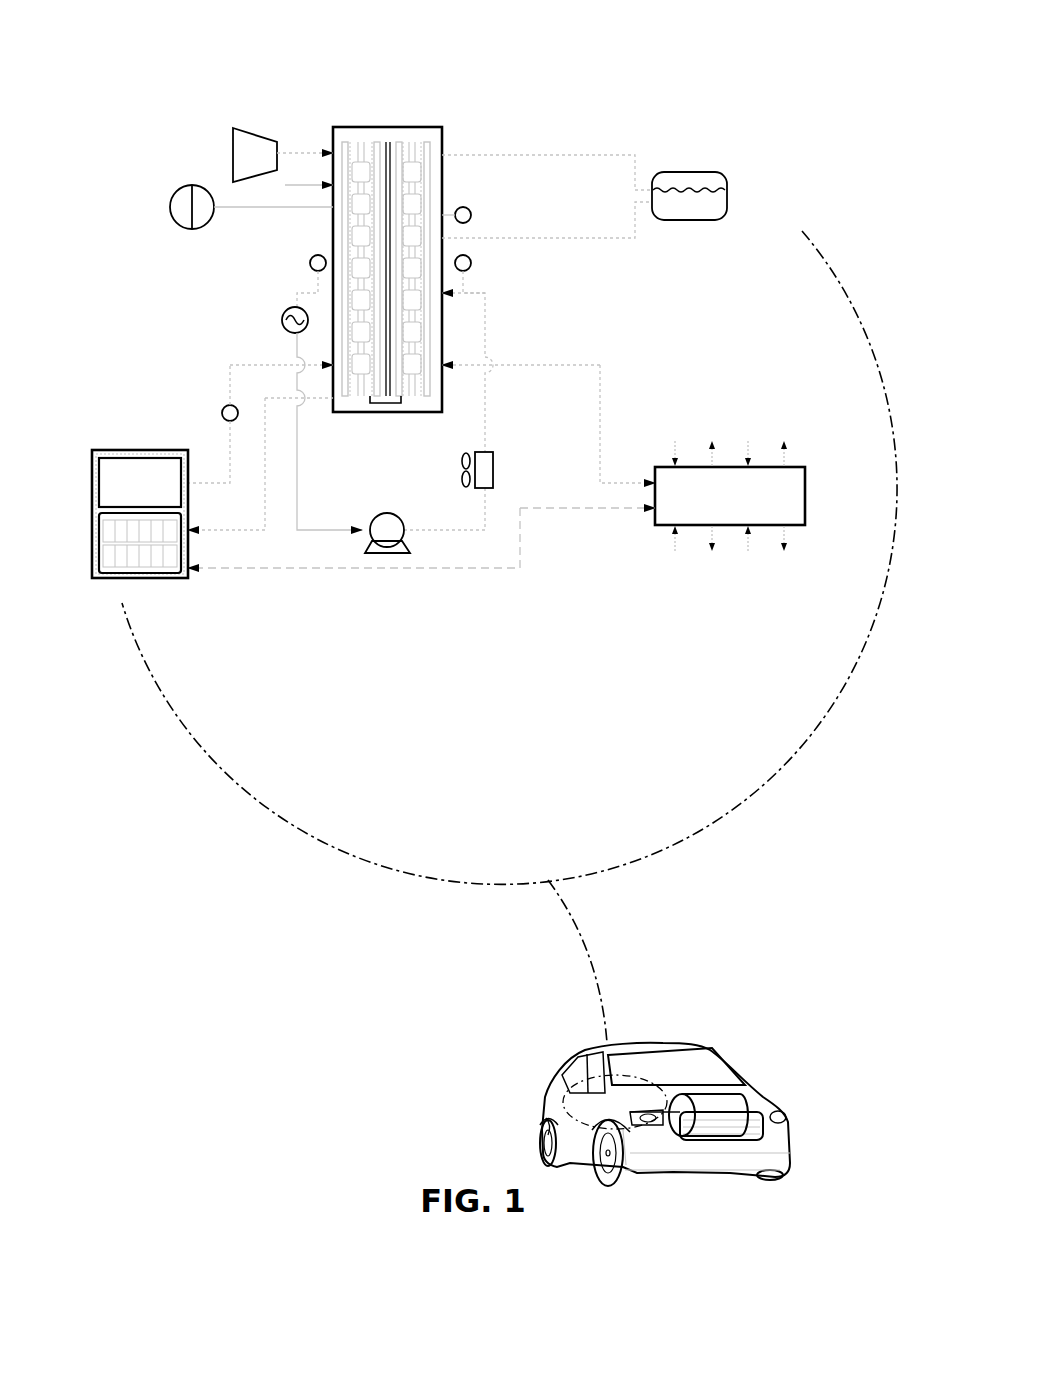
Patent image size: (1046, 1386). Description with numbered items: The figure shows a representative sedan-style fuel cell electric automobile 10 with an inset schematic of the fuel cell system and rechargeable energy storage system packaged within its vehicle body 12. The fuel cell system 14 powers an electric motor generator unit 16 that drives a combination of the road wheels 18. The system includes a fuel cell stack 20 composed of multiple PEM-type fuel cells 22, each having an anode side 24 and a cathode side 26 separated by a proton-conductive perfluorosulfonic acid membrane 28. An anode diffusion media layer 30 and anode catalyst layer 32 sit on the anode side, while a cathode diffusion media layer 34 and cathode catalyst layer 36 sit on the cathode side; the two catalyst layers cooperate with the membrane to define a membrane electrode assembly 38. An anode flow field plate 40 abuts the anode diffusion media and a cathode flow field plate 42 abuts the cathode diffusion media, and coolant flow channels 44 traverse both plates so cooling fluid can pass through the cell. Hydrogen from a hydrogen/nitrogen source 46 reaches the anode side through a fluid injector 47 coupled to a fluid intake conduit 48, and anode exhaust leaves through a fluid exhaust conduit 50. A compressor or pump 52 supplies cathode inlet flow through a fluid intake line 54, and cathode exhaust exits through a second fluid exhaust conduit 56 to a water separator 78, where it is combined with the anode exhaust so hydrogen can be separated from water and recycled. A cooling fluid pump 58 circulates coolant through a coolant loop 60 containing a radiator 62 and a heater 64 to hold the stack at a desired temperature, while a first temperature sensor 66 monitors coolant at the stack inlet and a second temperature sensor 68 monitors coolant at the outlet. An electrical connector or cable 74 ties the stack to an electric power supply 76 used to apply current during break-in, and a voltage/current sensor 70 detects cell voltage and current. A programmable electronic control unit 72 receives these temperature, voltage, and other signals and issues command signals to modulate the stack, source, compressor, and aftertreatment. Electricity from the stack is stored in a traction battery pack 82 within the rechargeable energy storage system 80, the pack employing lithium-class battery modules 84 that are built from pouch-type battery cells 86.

The automobile 10 is at (668, 1065).
The vehicle body 12 is at (757, 1100).
The fuel cell system 14 is at (720, 62).
The electric motor generator unit 16 is at (721, 1095).
The road wheels 18 is at (544, 1126).
The fuel cell stack 20 is at (417, 253).
The fuel cell 22 is at (428, 138).
The anode side 24 is at (288, 192).
The cathode side 26 is at (437, 193).
The proton-conductive perfluorosulfonic acid membrane 28 is at (388, 135).
The anode diffusion media layer 30 is at (358, 127).
The anode catalyst layer 32 is at (378, 138).
The cathode diffusion media layer 34 is at (416, 132).
The cathode catalyst layer 36 is at (398, 138).
The membrane electrode assembly 38 is at (388, 404).
The anode flow field plate 40 is at (355, 398).
The cathode flow field plate 42 is at (420, 398).
The coolant flow channels 44 is at (413, 172).
The hydrogen/nitrogen source 46 is at (97, 461).
The fluid injector 47 is at (222, 413).
The fluid intake conduit 48 is at (230, 367).
The fluid exhaust conduit 50 is at (598, 240).
The compressor or pump 52 is at (233, 132).
The fluid intake line 54 is at (302, 150).
The fluid exhaust conduit 56 is at (603, 155).
The cooling fluid pump 58 is at (371, 521).
The coolant loop 60 is at (485, 405).
The radiator 62 is at (493, 466).
The heater 64 is at (282, 318).
The first temperature sensor 66 is at (471, 263).
The second temperature sensor 68 is at (310, 262).
The voltage/current sensor 70 is at (471, 217).
The electronic control unit 72 is at (805, 483).
The electrical connector or cable 74 is at (243, 210).
The electric power supply 76 is at (170, 205).
The water separator 78 is at (712, 172).
The rechargeable energy storage system 80 is at (130, 499).
The traction battery pack 82 is at (100, 518).
The battery modules 84 is at (174, 522).
The battery cells 86 is at (113, 557).